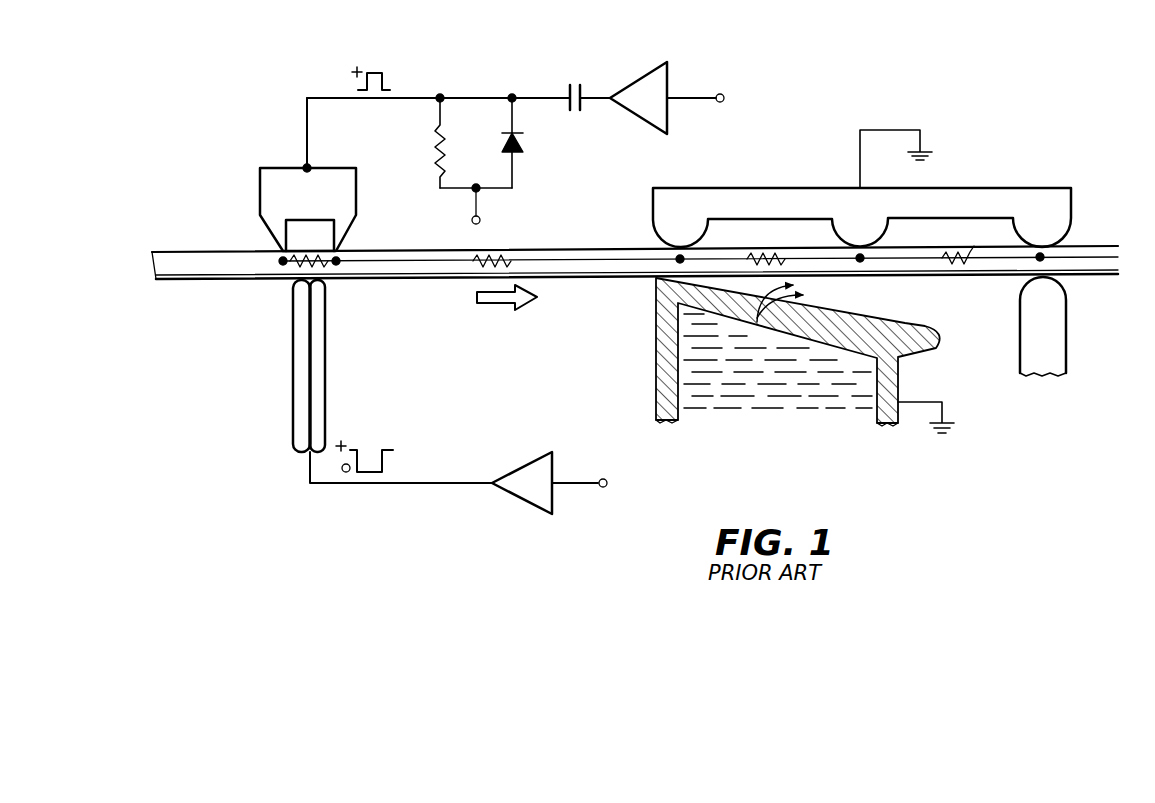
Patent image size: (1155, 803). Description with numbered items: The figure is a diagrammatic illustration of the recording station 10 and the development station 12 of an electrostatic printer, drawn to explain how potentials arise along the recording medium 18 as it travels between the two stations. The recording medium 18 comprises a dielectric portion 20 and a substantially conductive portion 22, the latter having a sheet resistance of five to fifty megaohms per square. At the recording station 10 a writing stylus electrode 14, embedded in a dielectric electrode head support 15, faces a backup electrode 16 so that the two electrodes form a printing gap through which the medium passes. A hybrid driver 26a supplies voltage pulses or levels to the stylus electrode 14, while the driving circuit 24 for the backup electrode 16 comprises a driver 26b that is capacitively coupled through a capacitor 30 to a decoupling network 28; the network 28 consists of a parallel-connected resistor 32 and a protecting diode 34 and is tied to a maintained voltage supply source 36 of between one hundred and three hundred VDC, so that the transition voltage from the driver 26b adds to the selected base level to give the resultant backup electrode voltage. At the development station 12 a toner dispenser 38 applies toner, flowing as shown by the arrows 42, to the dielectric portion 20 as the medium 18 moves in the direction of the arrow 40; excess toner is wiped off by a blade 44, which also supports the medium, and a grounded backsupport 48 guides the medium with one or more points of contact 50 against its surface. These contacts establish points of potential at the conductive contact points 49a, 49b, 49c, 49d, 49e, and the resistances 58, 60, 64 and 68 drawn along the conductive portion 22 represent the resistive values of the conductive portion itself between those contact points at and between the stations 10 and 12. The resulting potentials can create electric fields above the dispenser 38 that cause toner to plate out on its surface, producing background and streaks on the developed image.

The recording station 10 is at (256, 234).
The development station 12 is at (1006, 179).
The writing stylus electrode 14 is at (302, 350).
The dielectric electrode head support 15 is at (296, 386).
The backup electrode 16 is at (285, 167).
The recording medium 18 is at (214, 250).
The dielectric portion 20 is at (220, 280).
The conductive portion 22 is at (197, 268).
The driving circuit 24 is at (610, 86).
The driver 26a is at (522, 462).
The driver 26b is at (634, 104).
The decoupling network 28 is at (438, 188).
The capacitor 30 is at (570, 90).
The resistor 32 is at (436, 140).
The protecting diode 34 is at (526, 142).
The maintained voltage supply source 36 is at (470, 220).
The toner dispenser 38 is at (655, 351).
The arrow 40 is at (493, 304).
The arrows 42 is at (757, 319).
The blade 44 is at (1058, 330).
The backsupport 48 is at (738, 194).
The conductive contact point 49a is at (284, 264).
The conductive contact point 49b is at (338, 264).
The conductive contact point 49c is at (678, 262).
The conductive contact point 49d is at (861, 262).
The conductive contact point 49e is at (1042, 262).
The point of contact 50 is at (666, 248).
The resistance 58 is at (323, 256).
The resistance 60 is at (486, 251).
The resistance 64 is at (764, 252).
The resistance 68 is at (978, 251).